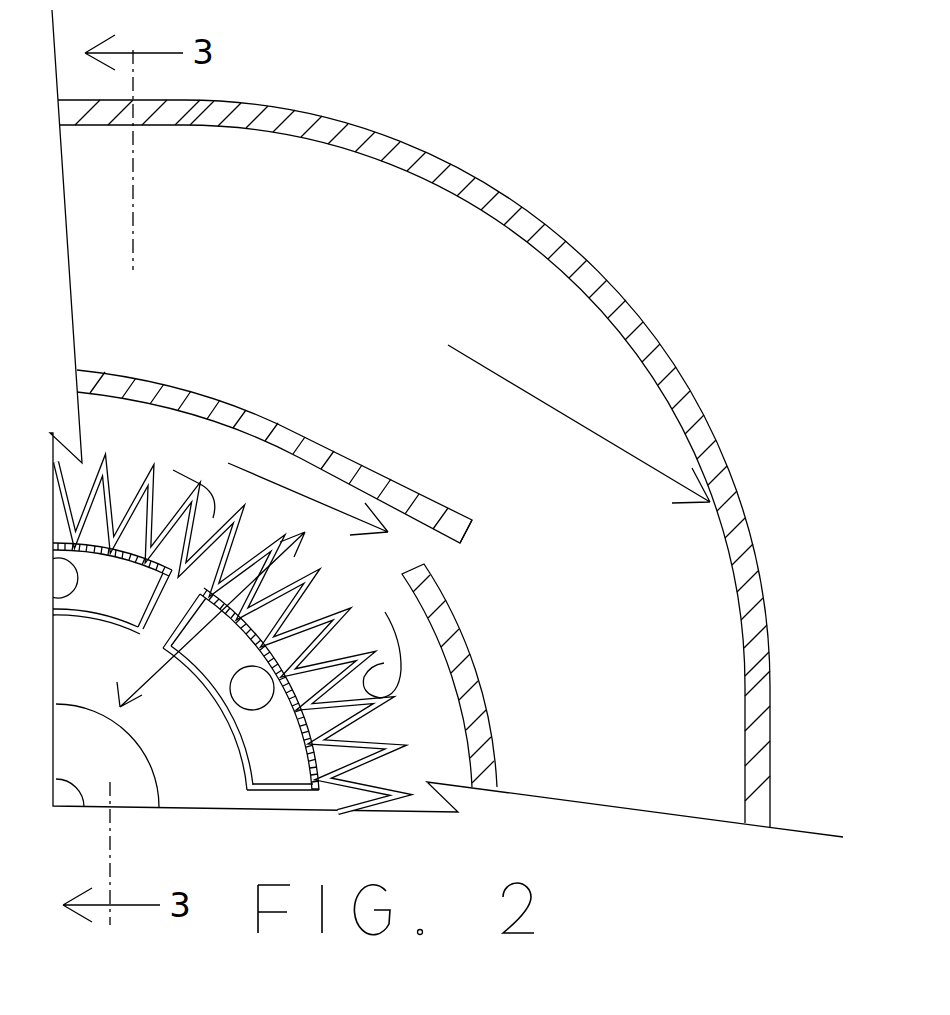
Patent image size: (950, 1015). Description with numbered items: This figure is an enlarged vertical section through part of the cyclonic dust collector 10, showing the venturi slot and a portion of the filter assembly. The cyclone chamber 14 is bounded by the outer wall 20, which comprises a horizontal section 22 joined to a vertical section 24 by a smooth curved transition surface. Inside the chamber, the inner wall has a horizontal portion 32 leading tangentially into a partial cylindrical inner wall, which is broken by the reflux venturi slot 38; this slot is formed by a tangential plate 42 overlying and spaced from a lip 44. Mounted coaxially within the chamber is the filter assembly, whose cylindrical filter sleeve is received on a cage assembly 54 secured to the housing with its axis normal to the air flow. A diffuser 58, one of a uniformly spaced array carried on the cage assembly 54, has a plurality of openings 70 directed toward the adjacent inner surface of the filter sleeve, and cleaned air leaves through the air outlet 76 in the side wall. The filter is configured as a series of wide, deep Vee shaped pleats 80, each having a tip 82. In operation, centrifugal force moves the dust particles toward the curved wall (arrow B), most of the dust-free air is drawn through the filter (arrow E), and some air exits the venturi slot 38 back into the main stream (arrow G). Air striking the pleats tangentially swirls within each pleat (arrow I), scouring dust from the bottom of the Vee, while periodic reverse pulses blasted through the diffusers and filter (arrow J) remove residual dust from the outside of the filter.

The cyclonic dust collector 10 is at (680, 262).
The cyclone chamber 14 is at (463, 442).
The outer wall 20 is at (733, 383).
The horizontal section 22 is at (102, 125).
The vertical section 24 is at (769, 688).
The horizontal portion 32 is at (103, 368).
The reflux venturi slot 38 is at (430, 553).
The tangential plate 42 is at (293, 432).
The lip 44 is at (428, 565).
The cage assembly 54 is at (102, 622).
The diffuser 58 is at (227, 715).
The openings 70 is at (312, 755).
The air outlet 76 is at (160, 787).
The Vee shaped pleats 80 is at (137, 497).
The tip 82 is at (385, 702).
The arrow B is at (565, 414).
The arrow E is at (211, 573).
The arrow G is at (294, 489).
The arrow I is at (388, 597).
The arrow J is at (251, 667).